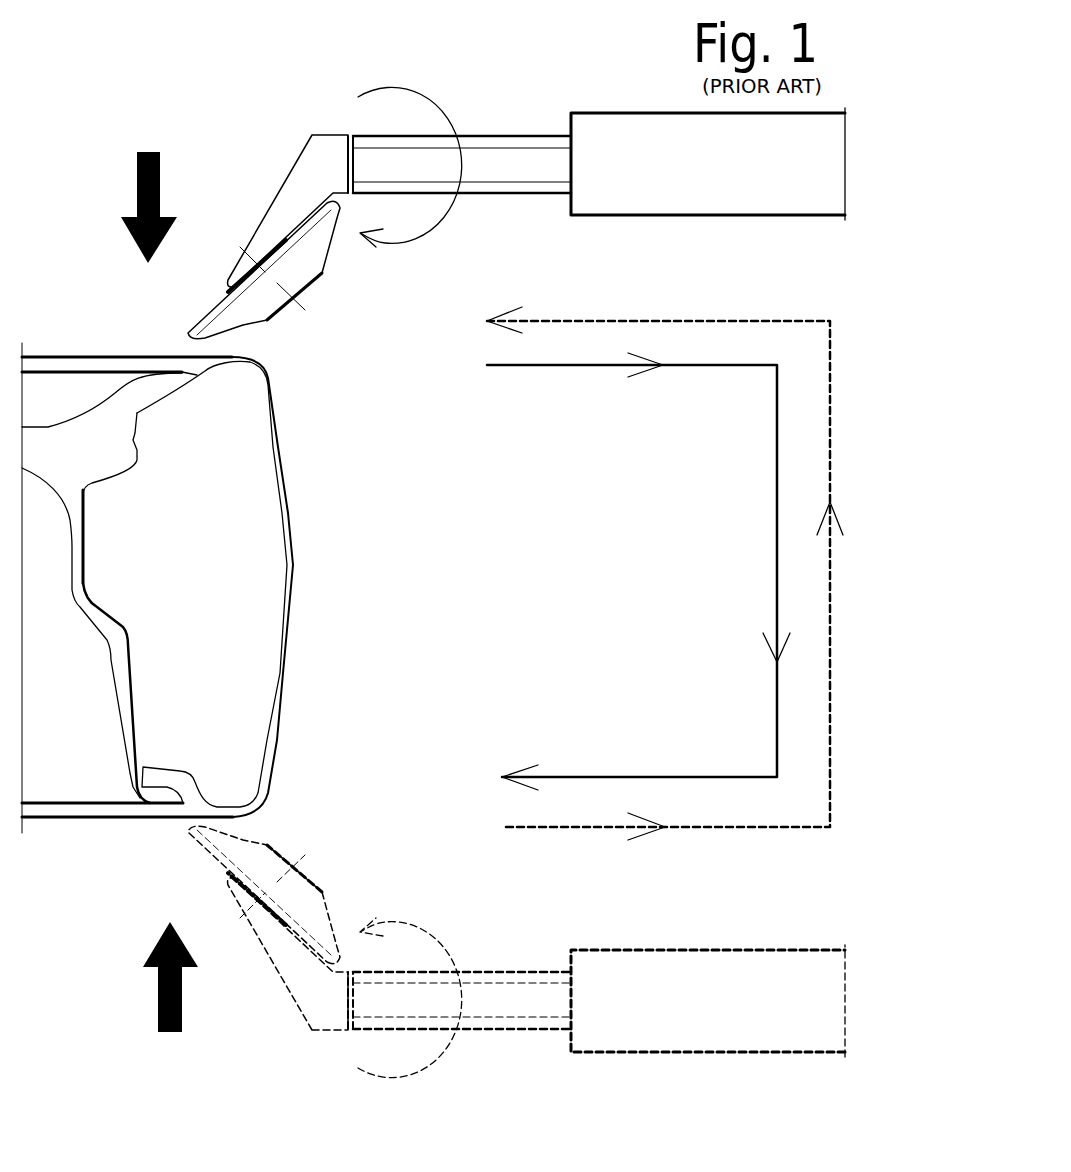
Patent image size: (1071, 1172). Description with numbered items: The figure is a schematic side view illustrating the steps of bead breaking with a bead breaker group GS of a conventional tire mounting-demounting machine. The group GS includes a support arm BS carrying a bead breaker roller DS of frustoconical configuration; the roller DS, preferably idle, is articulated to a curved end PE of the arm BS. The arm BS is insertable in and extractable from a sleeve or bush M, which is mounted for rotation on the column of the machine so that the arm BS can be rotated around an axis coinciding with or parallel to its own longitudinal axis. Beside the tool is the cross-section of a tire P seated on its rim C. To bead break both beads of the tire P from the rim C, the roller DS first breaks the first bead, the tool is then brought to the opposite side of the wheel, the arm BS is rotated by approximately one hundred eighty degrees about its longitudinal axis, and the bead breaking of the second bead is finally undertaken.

The bead breaker group GS is at (350, 122).
The curved end PE is at (290, 193).
The support arm BS is at (467, 193).
The sleeve or bush M is at (745, 215).
The rim C is at (198, 558).
The bead breaker roller DS is at (247, 328).
The tire P is at (293, 570).